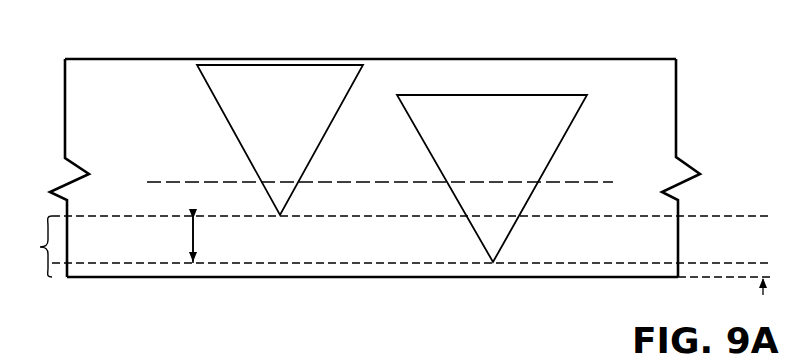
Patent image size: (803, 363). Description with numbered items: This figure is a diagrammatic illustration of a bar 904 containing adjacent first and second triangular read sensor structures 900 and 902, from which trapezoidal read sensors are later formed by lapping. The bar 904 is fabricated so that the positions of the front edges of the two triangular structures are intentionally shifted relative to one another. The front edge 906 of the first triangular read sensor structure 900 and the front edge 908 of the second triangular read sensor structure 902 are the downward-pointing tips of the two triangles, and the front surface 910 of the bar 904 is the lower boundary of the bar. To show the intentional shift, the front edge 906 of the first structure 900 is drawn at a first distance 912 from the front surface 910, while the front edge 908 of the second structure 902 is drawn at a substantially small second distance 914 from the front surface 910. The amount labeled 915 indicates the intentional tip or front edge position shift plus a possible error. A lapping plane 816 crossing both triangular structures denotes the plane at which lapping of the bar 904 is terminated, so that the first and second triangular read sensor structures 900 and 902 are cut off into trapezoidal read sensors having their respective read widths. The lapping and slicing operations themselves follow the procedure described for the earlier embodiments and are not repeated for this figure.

The first triangular read sensor structure 900 is at (280, 140).
The second triangular read sensor structure 902 is at (492, 178).
The bar 904 is at (499, 77).
The front edge of first triangular read sensor structure 906 is at (280, 215).
The front edge of second triangular read sensor structure 908 is at (493, 262).
The front surface of bar 910 is at (540, 277).
The first distance 912 is at (40, 247).
The second distance 914 is at (763, 262).
The tip position shift plus error 915 is at (191, 240).
The lapping plane 816 is at (153, 184).